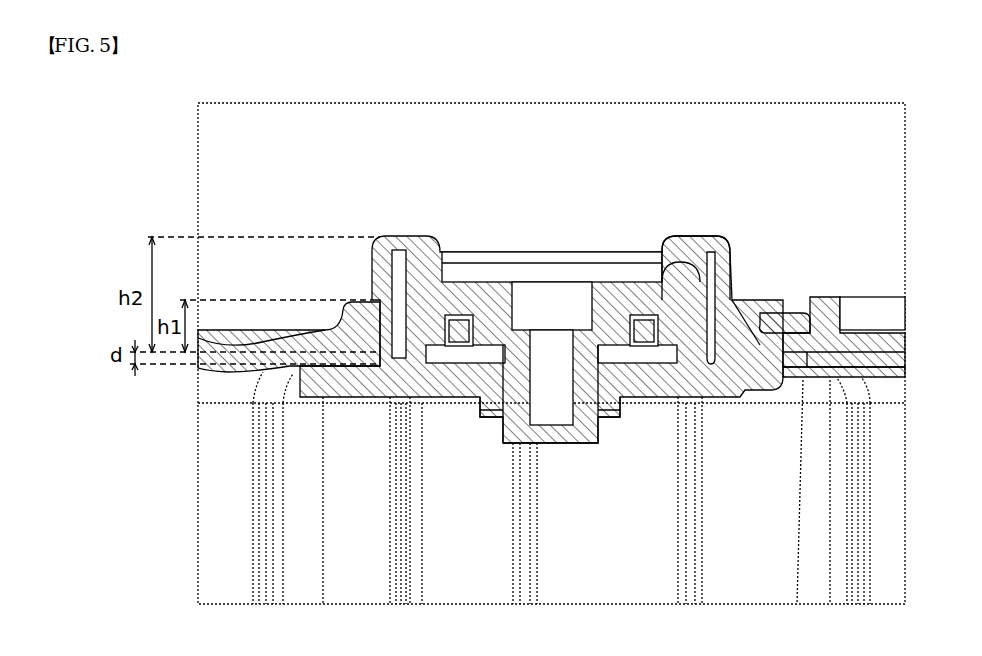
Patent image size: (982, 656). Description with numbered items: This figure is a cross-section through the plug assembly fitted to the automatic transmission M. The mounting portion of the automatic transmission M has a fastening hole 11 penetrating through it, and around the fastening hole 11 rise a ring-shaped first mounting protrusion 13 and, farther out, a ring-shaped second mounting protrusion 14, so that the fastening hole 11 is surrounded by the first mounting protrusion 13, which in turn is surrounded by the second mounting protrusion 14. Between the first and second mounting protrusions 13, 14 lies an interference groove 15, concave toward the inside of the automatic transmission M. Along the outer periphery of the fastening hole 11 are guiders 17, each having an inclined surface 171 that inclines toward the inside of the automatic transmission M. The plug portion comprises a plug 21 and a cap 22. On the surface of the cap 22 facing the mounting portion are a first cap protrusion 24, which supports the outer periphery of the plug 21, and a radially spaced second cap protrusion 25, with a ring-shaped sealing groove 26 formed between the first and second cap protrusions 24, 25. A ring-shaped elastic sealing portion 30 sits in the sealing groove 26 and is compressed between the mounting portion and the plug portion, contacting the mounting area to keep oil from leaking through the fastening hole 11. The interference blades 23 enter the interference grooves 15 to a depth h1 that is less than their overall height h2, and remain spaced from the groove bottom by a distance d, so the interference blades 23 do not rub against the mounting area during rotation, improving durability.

The fastening hole 11 is at (555, 430).
The first mounting protrusion 13 is at (414, 292).
The second mounting protrusion 14 is at (345, 322).
The interference groove 15 is at (378, 300).
The guider 17 is at (485, 406).
The inclined surface 171 is at (498, 420).
The plug 21 is at (540, 440).
The cap 22 is at (522, 258).
The interference blade 23 is at (722, 290).
The first cap protrusion 24 is at (618, 340).
The second cap protrusion 25 is at (685, 350).
The sealing groove 26 is at (688, 320).
The sealing portion 30 is at (460, 325).
The automatic transmission M is at (875, 342).